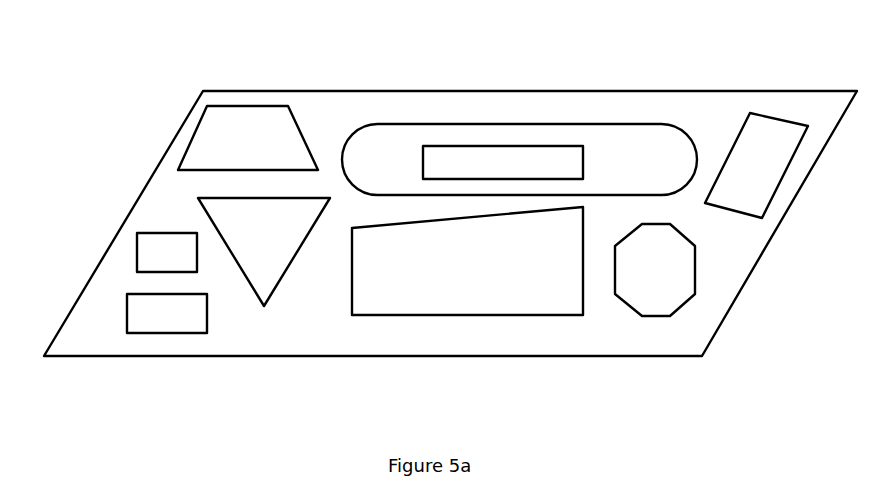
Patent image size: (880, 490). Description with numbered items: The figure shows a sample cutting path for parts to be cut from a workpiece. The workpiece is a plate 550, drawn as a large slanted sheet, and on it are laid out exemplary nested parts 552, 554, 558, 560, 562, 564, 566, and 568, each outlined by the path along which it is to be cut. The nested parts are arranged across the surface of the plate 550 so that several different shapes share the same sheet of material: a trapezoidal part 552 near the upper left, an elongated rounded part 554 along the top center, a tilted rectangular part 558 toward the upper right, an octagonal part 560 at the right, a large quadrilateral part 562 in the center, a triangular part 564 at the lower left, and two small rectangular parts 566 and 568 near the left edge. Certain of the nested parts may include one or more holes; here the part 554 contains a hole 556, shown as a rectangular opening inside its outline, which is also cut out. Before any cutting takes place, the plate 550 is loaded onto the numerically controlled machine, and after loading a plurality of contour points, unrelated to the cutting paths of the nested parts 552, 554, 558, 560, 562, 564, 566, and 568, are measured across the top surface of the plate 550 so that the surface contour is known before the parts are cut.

The plate 550 is at (453, 356).
The nested part 552 is at (273, 105).
The nested part 554 is at (432, 124).
The hole 556 is at (505, 146).
The nested part 558 is at (775, 116).
The nested part 560 is at (695, 270).
The nested part 562 is at (527, 315).
The nested part 564 is at (282, 280).
The nested part 566 is at (165, 333).
The nested part 568 is at (137, 250).